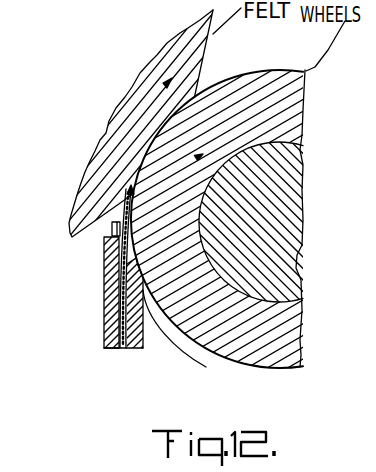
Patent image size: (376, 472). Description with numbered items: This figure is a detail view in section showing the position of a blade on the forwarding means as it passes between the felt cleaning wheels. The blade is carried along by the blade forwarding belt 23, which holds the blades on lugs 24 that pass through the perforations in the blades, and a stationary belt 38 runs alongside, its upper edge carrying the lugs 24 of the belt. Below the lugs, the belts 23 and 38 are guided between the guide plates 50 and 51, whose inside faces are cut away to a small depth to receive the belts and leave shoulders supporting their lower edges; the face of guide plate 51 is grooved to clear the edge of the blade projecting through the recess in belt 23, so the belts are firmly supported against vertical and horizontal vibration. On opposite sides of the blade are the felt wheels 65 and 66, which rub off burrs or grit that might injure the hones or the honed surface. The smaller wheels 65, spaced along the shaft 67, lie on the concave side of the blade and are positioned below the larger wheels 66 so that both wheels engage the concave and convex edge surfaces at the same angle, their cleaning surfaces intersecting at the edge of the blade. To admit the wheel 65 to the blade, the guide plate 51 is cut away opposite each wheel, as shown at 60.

The felt wheel 66 is at (205, 52).
The felt wheel 65 is at (273, 70).
The shaft 67 is at (304, 210).
The guide plate 50 is at (104, 280).
The lug 24 is at (112, 230).
The blade forwarding belt 23 is at (121, 349).
The guide plate 51 is at (145, 348).
The cut-away 60 is at (206, 367).
The stationary belt 38 is at (116, 349).